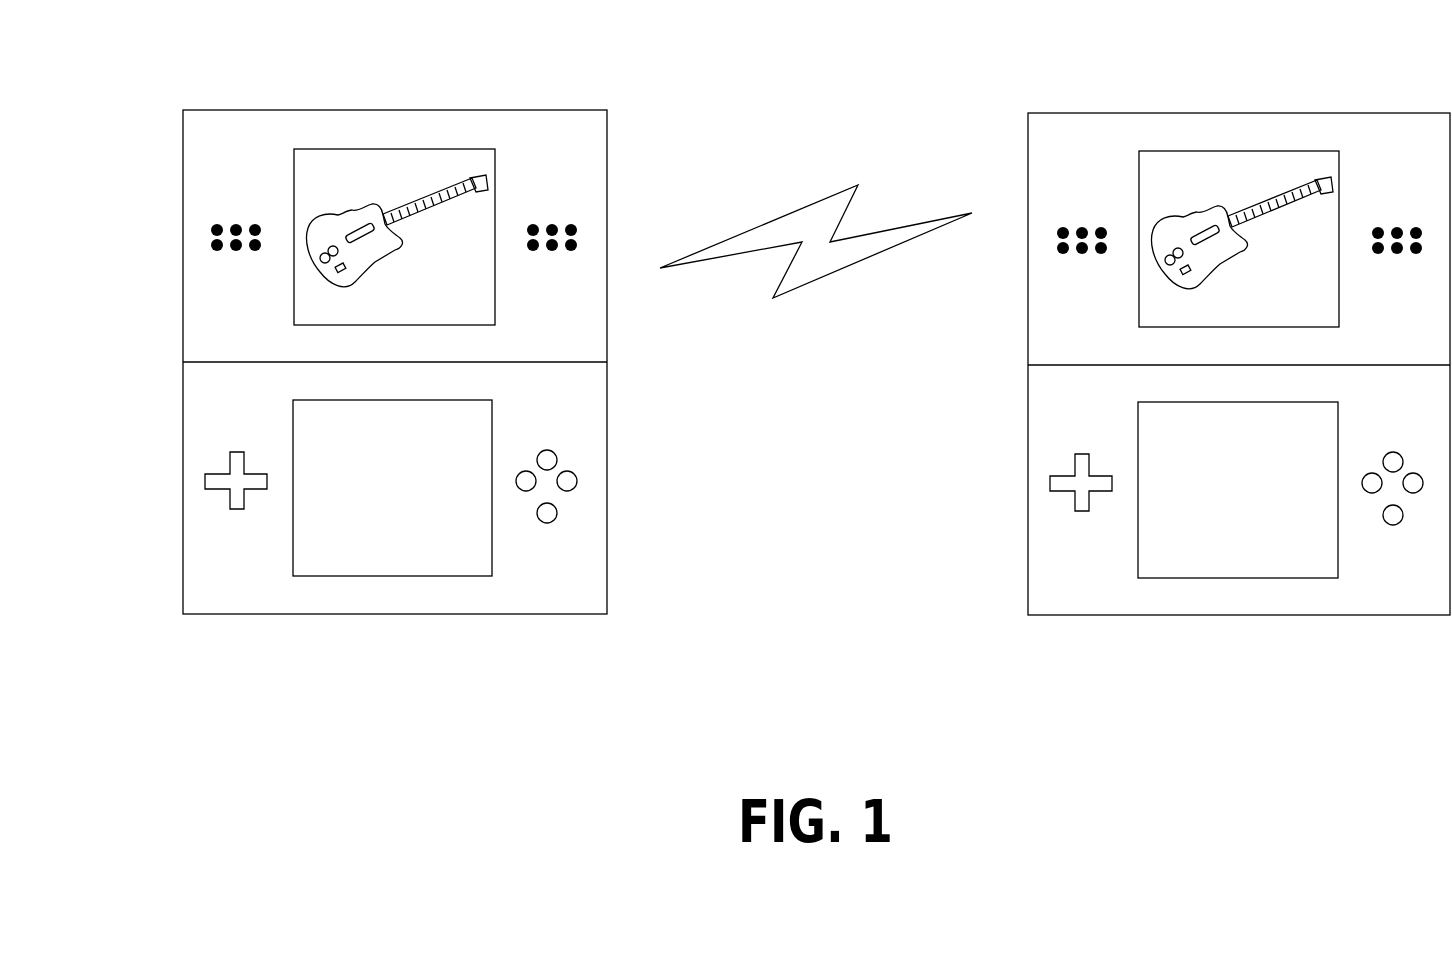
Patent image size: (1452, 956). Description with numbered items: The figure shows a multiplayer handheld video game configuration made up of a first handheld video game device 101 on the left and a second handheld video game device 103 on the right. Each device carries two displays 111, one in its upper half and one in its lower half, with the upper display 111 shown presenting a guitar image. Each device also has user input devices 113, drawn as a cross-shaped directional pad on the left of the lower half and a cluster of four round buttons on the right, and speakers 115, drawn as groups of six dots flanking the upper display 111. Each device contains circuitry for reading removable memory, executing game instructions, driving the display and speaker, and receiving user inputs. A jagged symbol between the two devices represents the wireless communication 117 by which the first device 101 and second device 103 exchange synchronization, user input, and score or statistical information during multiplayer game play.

The first handheld video game device 101 is at (240, 110).
The second handheld video game device 103 is at (1110, 113).
The display 111 is at (442, 149).
The user input device 113 is at (242, 510).
The speaker 115 is at (255, 252).
The wireless communication 117 is at (855, 263).